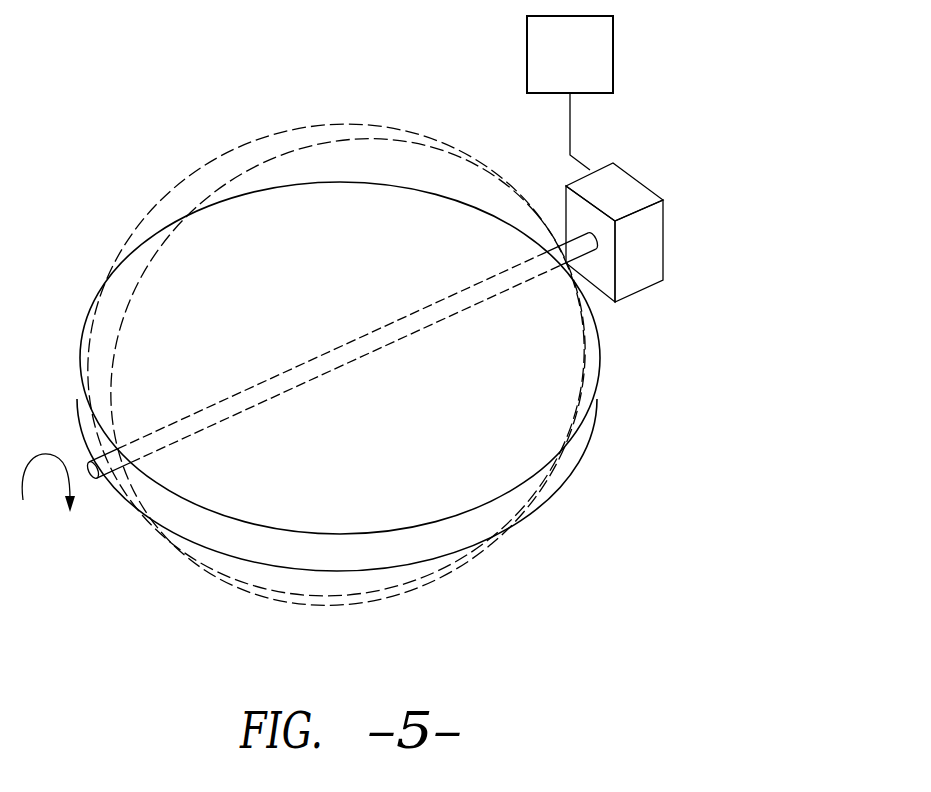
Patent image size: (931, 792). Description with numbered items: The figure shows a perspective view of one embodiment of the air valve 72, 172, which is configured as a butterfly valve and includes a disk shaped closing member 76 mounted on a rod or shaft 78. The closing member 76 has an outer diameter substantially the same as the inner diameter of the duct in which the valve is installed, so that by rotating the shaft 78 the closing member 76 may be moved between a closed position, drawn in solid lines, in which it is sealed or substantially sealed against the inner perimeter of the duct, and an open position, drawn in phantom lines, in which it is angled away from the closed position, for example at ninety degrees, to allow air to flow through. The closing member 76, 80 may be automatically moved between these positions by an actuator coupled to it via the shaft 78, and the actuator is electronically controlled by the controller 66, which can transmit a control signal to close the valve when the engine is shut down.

The air valve 72 is at (336, 346).
The air valve 172 is at (348, 365).
The closing member 76 is at (530, 490).
The shaft 78 is at (95, 462).
The closing member 80 is at (633, 277).
The controller 66 is at (584, 66).